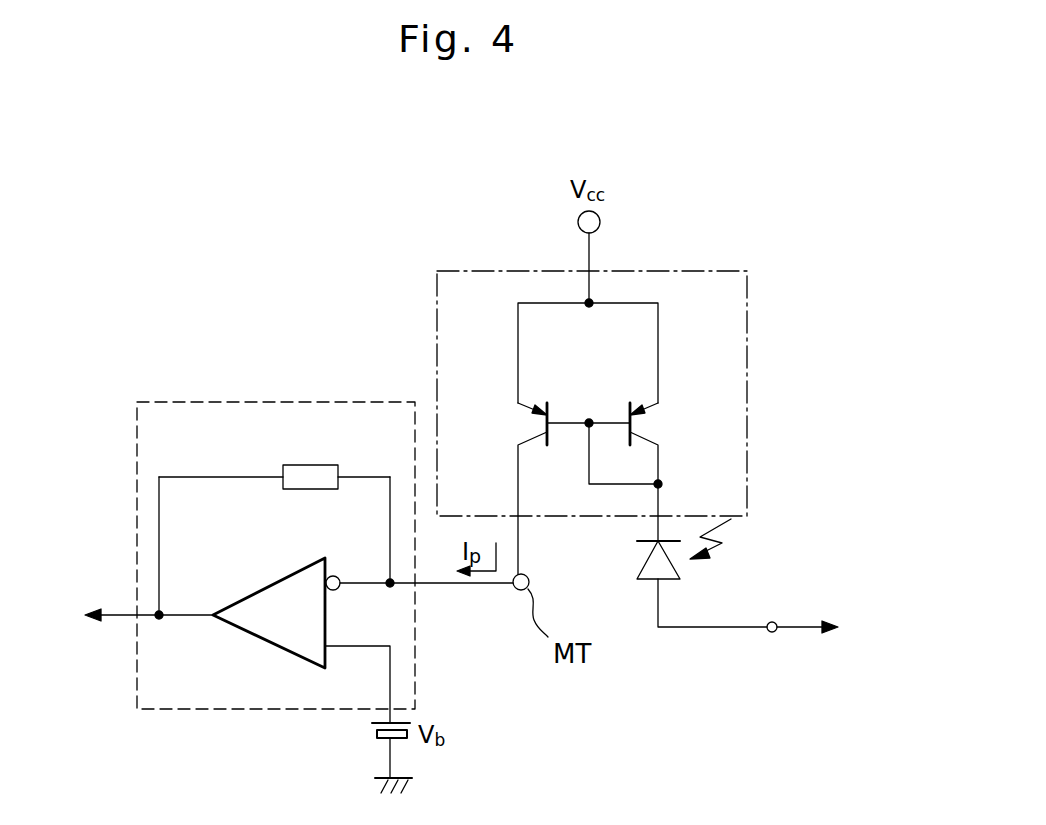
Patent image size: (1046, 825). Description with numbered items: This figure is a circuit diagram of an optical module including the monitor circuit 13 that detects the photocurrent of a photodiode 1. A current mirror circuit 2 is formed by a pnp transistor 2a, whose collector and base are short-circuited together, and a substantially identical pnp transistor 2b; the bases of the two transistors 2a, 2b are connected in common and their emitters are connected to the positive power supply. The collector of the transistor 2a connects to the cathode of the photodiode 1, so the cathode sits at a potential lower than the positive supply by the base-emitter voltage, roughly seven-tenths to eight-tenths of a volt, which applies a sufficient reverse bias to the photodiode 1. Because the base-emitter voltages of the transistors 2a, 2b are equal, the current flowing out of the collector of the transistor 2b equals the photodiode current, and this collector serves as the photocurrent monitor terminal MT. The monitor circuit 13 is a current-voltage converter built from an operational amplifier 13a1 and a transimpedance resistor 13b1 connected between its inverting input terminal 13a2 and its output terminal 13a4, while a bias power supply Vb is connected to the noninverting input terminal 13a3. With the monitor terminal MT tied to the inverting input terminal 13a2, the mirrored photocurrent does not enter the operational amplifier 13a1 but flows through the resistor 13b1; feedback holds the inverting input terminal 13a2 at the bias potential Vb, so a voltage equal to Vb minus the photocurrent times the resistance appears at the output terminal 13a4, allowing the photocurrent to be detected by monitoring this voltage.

The photodiode 1 is at (645, 560).
The current mirror circuit 2 is at (592, 390).
The pnp transistor 2a is at (650, 424).
The pnp transistor 2b is at (532, 424).
The monitor circuit 13 is at (250, 596).
The operational amplifier 13a1 is at (285, 560).
The inverting input terminal 13a2 is at (352, 553).
The noninverting input terminal 13a3 is at (330, 650).
The output terminal 13a4 is at (185, 612).
The resistor 13b1 is at (312, 465).